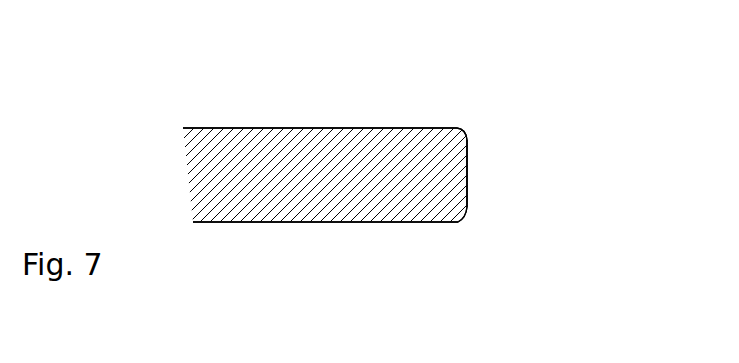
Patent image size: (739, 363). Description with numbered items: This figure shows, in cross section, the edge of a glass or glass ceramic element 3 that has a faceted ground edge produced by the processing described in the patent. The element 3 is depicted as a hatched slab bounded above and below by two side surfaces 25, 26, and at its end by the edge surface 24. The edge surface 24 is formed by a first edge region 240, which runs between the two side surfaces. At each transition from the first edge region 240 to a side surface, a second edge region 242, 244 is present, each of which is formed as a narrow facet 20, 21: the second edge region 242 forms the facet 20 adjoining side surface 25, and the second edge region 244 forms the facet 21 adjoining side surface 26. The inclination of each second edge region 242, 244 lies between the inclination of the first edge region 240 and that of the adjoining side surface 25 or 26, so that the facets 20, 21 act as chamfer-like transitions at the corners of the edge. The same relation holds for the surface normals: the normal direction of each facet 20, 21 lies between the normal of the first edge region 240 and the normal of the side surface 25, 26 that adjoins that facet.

The glass or glass ceramic element 3 is at (400, 95).
The side surface 25 is at (317, 128).
The side surface 26 is at (273, 223).
The facet 20 is at (530, 118).
The second edge region 242 is at (460, 133).
The first edge region 240 is at (468, 156).
The edge surface 24 is at (480, 175).
The facet 21 is at (544, 232).
The second edge region 244 is at (462, 218).